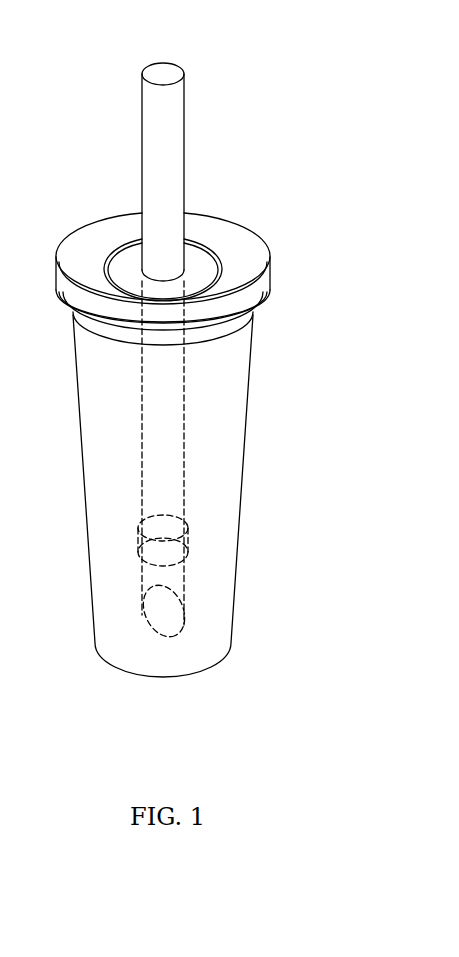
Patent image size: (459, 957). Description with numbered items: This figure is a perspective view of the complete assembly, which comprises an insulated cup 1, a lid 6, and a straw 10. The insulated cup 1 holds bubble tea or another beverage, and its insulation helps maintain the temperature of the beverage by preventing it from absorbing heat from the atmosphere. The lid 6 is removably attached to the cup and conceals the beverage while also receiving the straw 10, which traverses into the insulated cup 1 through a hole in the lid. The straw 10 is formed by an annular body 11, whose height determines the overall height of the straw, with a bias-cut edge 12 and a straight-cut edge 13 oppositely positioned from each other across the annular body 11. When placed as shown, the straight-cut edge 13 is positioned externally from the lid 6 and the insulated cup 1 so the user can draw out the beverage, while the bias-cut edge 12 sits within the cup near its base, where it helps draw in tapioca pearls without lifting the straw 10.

The insulated cup 1 is at (288, 536).
The lid 6 is at (269, 229).
The straw 10 is at (206, 138).
The annular body 11 is at (142, 165).
The bias-cut edge 12 is at (145, 612).
The straight-cut edge 13 is at (142, 72).